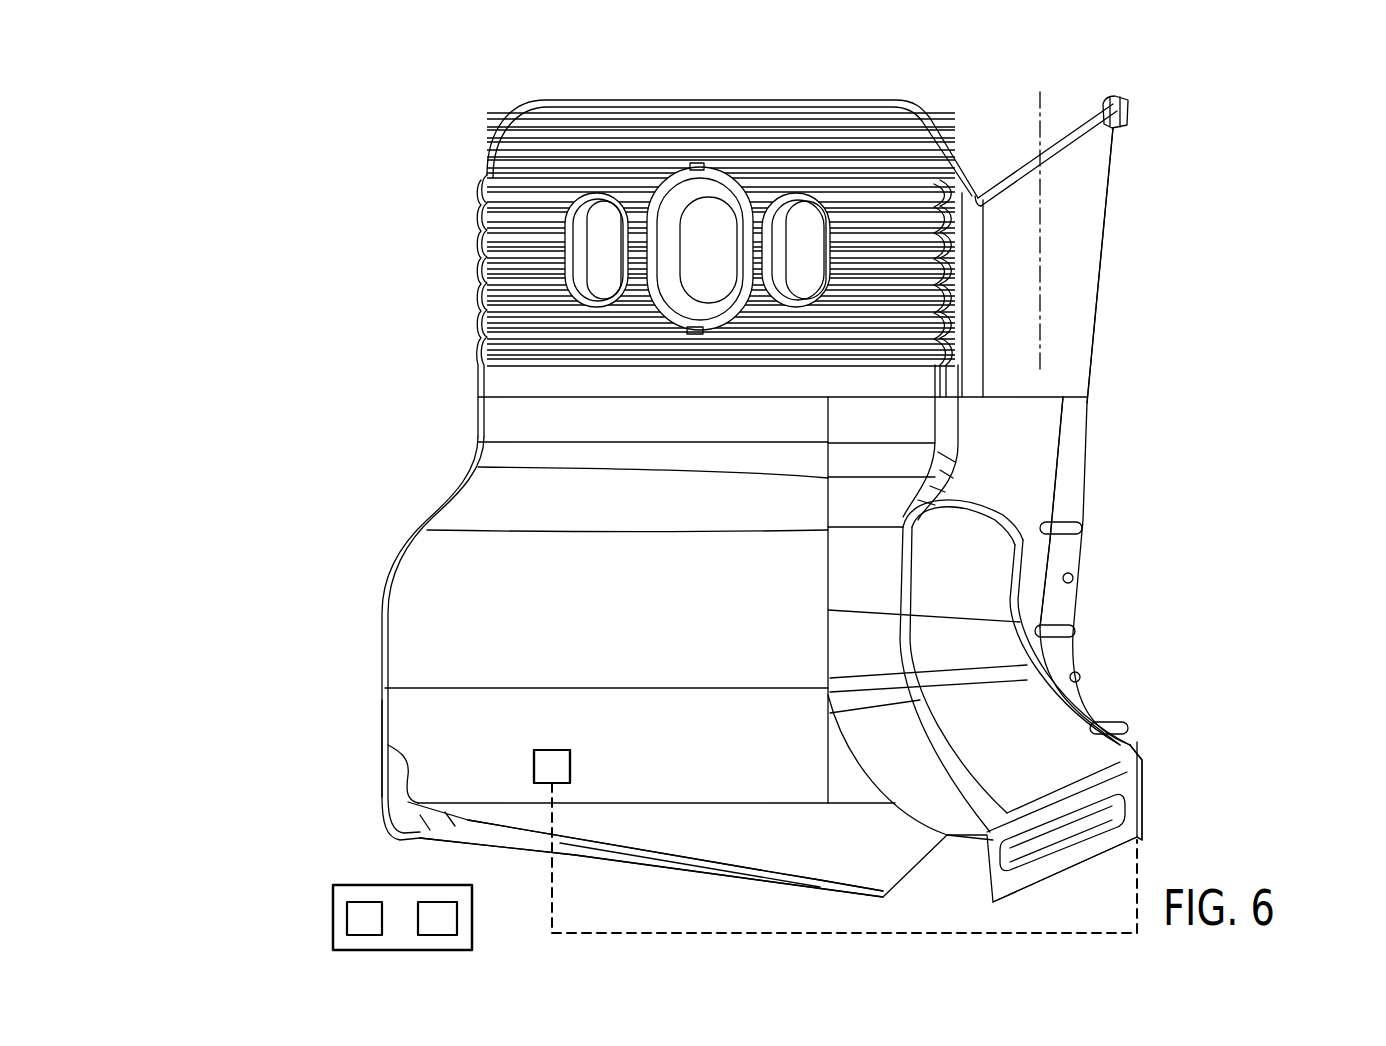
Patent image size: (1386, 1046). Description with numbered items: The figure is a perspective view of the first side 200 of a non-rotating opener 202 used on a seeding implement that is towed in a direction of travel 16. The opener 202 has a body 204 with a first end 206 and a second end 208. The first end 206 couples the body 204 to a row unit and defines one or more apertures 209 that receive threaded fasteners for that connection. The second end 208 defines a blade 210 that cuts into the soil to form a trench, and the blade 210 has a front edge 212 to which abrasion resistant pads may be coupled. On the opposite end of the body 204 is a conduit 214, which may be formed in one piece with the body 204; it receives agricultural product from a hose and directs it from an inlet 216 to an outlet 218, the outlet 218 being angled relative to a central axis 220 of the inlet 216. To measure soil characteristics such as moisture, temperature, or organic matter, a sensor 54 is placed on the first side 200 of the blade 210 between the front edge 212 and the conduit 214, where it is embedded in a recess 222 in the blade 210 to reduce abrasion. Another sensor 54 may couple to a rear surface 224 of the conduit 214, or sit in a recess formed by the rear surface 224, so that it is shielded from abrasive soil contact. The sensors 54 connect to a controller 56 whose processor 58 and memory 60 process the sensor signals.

The direction of travel 16 is at (317, 782).
The sensor 54 is at (572, 768).
The controller 56 is at (333, 918).
The processor 58 is at (363, 900).
The memory 60 is at (457, 915).
The first side 200 is at (512, 595).
The opener 202 is at (1240, 248).
The body 204 is at (350, 186).
The first end 206 is at (706, 108).
The second end 208 is at (700, 873).
The apertures 209 is at (608, 215).
The blade 210 is at (313, 328).
The front edge 212 is at (383, 732).
The conduit 214 is at (1078, 325).
The inlet 216 is at (1075, 142).
The outlet 218 is at (1063, 847).
The central axis 220 is at (1037, 125).
The recess 222 is at (553, 750).
The rear surface 224 is at (1052, 645).